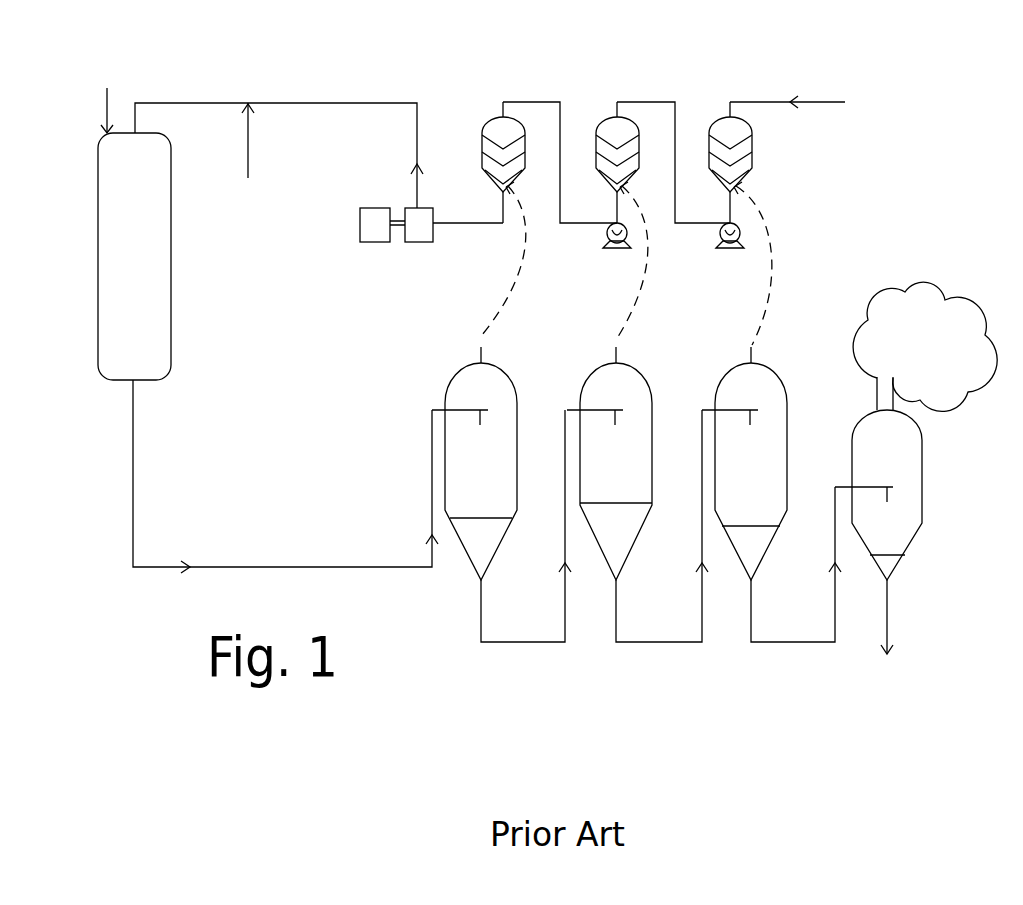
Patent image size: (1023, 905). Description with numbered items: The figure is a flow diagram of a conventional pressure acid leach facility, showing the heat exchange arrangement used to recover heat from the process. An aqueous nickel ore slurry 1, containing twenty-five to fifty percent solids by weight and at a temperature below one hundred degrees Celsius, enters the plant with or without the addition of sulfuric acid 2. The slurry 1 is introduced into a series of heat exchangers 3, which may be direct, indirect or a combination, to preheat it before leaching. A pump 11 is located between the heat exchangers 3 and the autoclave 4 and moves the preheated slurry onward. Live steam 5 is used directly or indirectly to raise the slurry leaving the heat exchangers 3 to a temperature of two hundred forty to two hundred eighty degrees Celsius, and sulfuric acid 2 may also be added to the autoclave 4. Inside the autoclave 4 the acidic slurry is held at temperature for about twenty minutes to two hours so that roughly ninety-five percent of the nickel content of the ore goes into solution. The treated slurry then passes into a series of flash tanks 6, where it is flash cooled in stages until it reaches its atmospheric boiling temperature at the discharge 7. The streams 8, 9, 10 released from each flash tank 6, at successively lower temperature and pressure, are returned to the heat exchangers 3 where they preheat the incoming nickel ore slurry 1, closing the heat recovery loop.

The aqueous nickel ore slurry 1 is at (828, 100).
The sulfuric acid 2 is at (249, 165).
The series of heat exchangers 3 is at (717, 96).
The autoclave 4 is at (172, 339).
The live steam 5 is at (108, 93).
The series of flash tanks 6 is at (637, 519).
The discharge 7 is at (888, 632).
The stream from first flash tank 8 is at (481, 345).
The stream from second flash tank 9 is at (616, 345).
The stream from third flash tank 10 is at (751, 345).
The pump 11 is at (404, 243).